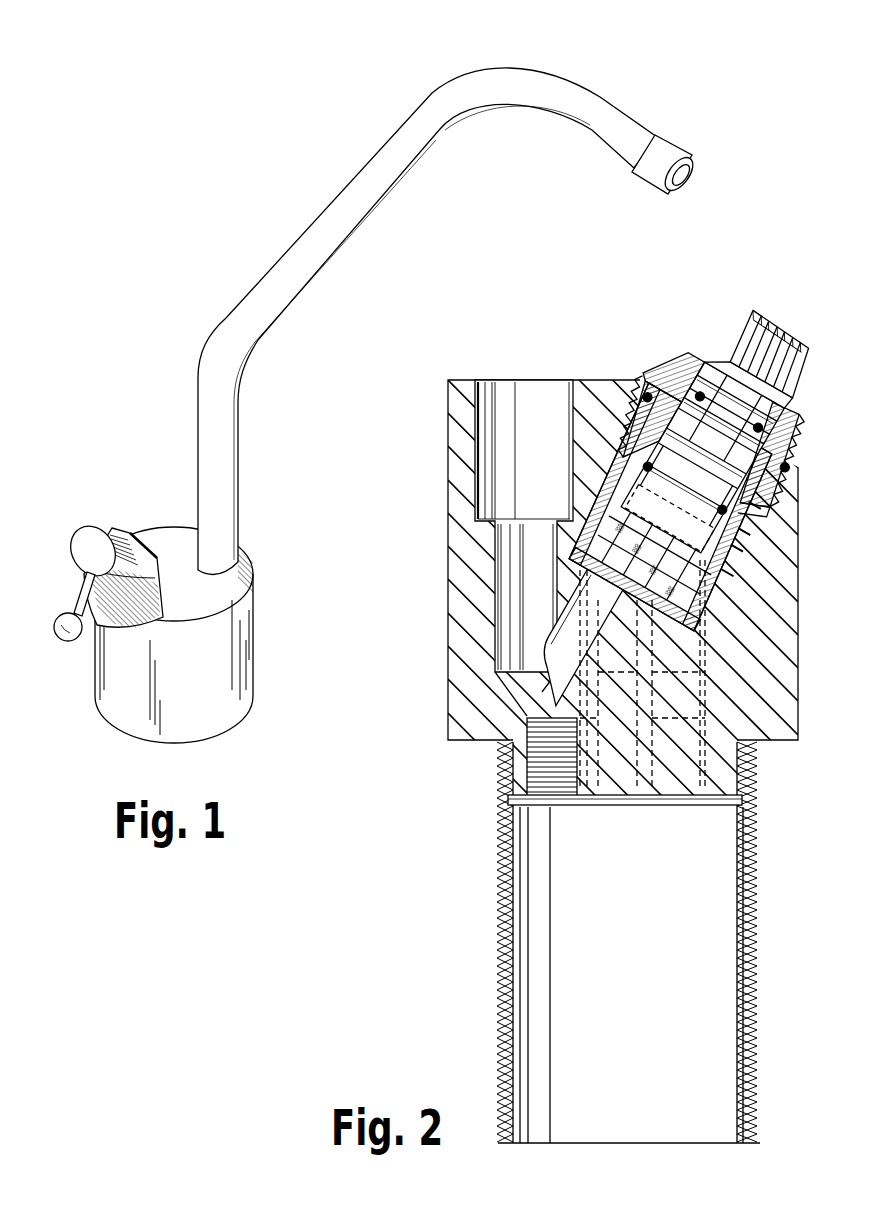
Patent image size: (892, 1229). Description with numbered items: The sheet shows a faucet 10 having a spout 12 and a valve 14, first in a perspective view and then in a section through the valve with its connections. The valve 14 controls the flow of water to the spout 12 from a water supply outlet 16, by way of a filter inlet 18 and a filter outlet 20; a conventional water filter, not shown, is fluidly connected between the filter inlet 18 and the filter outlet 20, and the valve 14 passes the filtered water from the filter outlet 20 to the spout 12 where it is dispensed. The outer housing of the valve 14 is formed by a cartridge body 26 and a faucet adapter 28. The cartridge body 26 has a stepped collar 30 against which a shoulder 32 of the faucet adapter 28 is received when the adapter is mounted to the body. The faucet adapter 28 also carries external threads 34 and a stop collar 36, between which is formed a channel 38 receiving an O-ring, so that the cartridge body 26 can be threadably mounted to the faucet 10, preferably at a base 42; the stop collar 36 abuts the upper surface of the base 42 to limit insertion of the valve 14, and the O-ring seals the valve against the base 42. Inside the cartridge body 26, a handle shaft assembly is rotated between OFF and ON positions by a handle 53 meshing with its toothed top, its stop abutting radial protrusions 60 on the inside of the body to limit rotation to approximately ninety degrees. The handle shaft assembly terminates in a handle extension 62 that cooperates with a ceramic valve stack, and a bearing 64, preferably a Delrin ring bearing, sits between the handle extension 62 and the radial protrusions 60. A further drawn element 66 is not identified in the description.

In FIG. 1, the faucet 10 is at (165, 199).
In FIG. 1, the spout 12 is at (552, 74).
In FIG. 2, the spout 12 is at (549, 393).
In FIG. 1, the valve 14 is at (113, 558).
In FIG. 2, the valve 14 is at (704, 362).
In FIG. 2, the water supply outlet 16 is at (677, 796).
In FIG. 2, the filter inlet 18 is at (613, 796).
In FIG. 2, the filter outlet 20 is at (554, 796).
In FIG. 2, the cartridge body 26 is at (617, 437).
In FIG. 2, the faucet adapter 28 is at (668, 370).
In FIG. 2, the stepped collar 30 is at (645, 378).
In FIG. 2, the shoulder 32 is at (662, 376).
In FIG. 2, the external threads 34 is at (777, 504).
In FIG. 2, the stop collar 36 is at (800, 458).
In FIG. 2, the channel 38 is at (778, 396).
In FIG. 1, the base 42 is at (120, 594).
In FIG. 2, the base 42 is at (786, 482).
In FIG. 1, the handle 53 is at (73, 597).
In FIG. 2, the radial protrusions 60 is at (762, 508).
In FIG. 2, the handle extension 62 is at (757, 560).
In FIG. 2, the bearing 64 is at (763, 542).
In FIG. 2, the port 66 is at (757, 590).